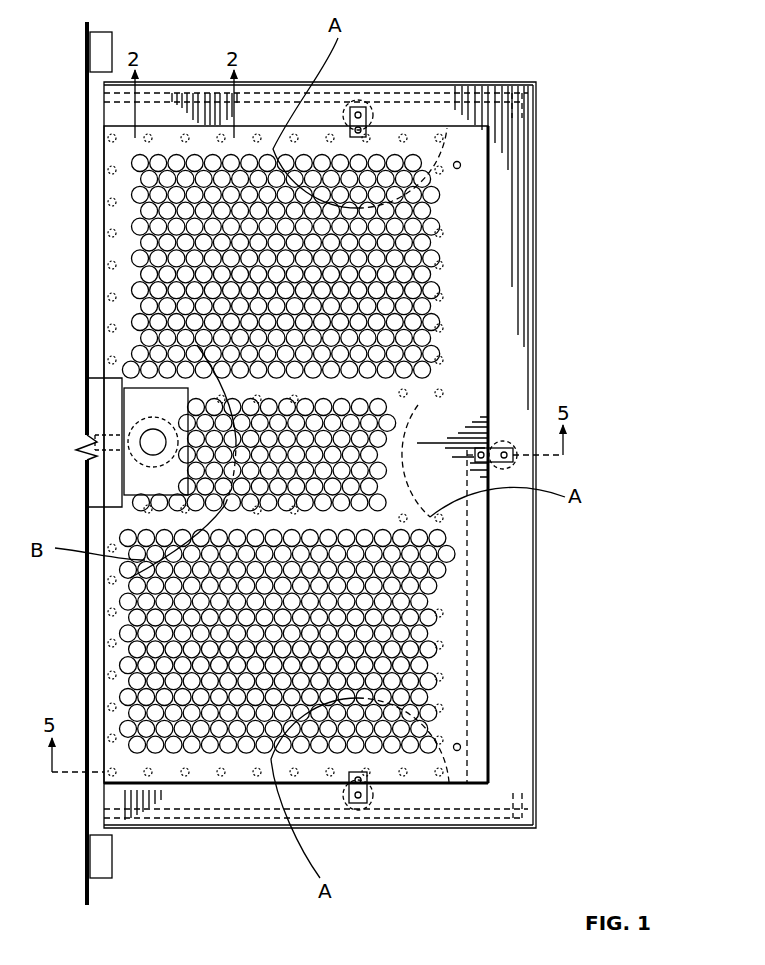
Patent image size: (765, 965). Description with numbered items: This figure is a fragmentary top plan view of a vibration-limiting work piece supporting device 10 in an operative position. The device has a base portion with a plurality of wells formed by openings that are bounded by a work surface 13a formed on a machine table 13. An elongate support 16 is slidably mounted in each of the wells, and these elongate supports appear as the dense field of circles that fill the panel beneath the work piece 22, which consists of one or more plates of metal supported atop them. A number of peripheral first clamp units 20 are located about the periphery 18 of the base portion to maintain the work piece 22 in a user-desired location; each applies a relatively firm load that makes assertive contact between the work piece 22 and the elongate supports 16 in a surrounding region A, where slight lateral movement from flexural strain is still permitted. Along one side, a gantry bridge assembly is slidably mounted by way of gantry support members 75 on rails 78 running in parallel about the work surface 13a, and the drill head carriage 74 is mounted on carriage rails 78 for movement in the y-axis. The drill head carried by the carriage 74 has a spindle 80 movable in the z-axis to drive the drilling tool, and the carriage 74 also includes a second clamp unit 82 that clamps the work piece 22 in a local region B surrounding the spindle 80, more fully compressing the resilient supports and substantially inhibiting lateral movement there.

The vibration-limiting work piece supporting device 10 is at (576, 138).
The machine table 13 is at (538, 353).
The work surface 13a is at (511, 335).
The elongate support 16 is at (540, 380).
The periphery 18 is at (492, 773).
The peripheral first clamp unit 20 is at (382, 104).
The work piece 22 is at (473, 308).
The drill head carriage 74 is at (100, 388).
The gantry support member 75 is at (112, 48).
The rail 78 is at (288, 100).
The spindle 80 is at (140, 465).
The second clamp unit 82 is at (100, 420).